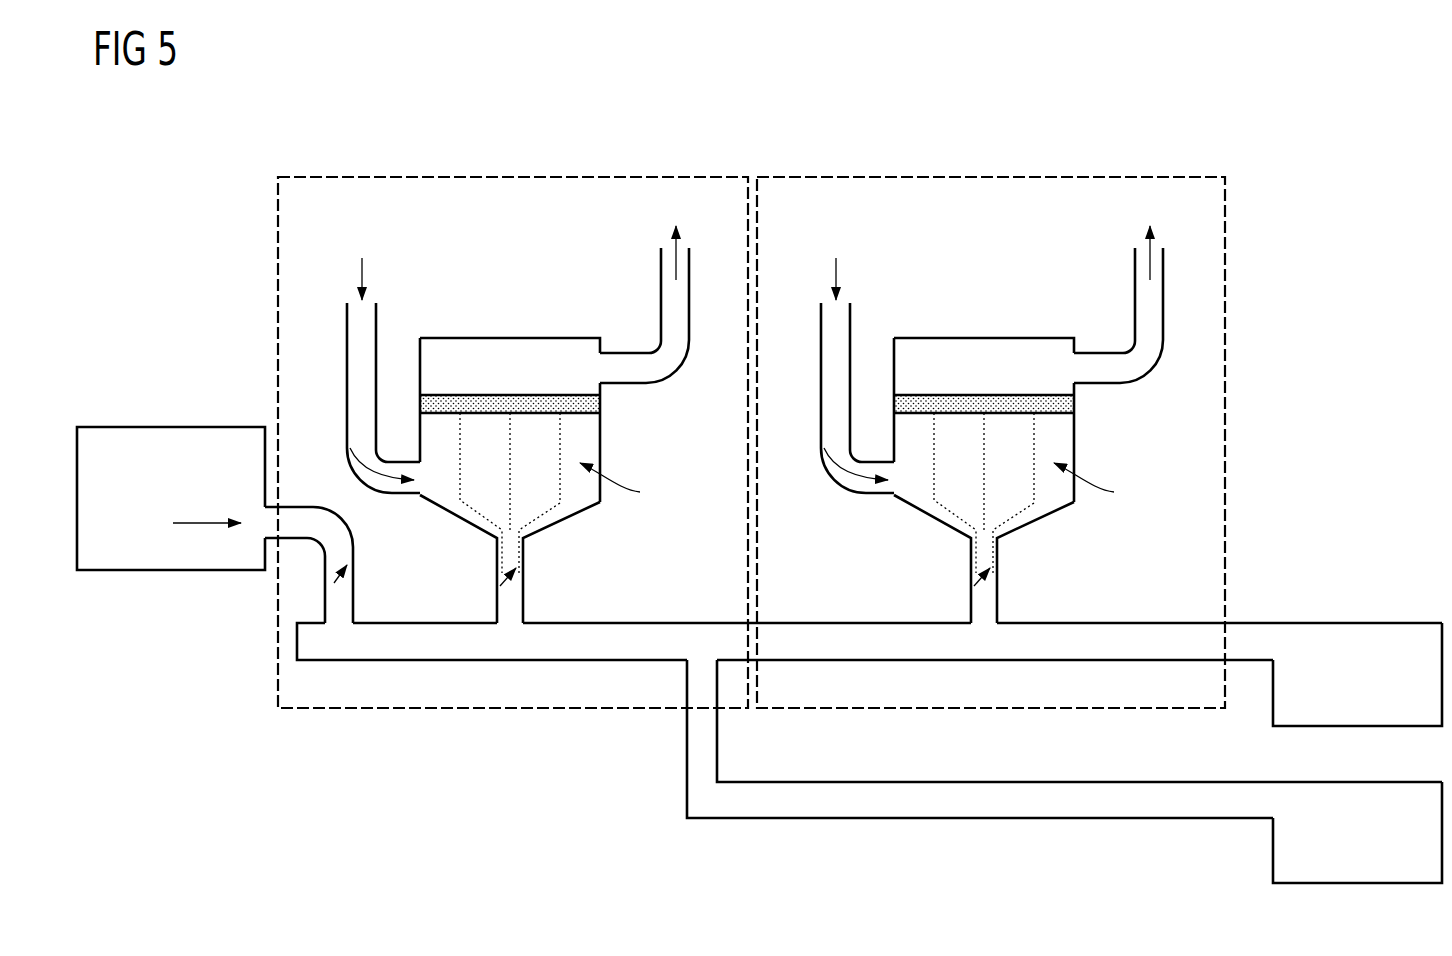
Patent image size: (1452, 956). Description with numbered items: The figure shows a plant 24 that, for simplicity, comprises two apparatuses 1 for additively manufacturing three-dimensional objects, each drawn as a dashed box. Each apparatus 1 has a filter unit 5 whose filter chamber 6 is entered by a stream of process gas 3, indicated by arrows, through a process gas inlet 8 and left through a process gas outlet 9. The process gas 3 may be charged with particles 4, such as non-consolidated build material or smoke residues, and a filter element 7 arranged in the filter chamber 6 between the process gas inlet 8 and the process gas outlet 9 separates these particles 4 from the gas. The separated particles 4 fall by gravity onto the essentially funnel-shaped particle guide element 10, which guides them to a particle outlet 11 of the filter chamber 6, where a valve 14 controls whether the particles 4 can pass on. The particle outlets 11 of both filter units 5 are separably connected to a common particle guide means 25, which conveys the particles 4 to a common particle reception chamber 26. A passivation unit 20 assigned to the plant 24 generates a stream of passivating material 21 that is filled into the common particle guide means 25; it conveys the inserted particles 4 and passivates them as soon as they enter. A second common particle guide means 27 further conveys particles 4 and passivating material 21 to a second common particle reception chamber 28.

The apparatus 1 is at (516, 156).
The process gas 3 is at (360, 272).
The particles 4 is at (457, 498).
The filter unit 5 is at (452, 282).
The filter chamber 6 is at (858, 485).
The filter element 7 is at (600, 405).
The process gas inlet 8 is at (349, 447).
The process gas outlet 9 is at (604, 369).
The particle guide element 10 is at (470, 527).
The particle outlet 11 is at (525, 558).
The valve 14 is at (336, 583).
The passivation unit 20 is at (147, 427).
The passivating material 21 is at (210, 525).
The plant 24 is at (263, 146).
The common particle guide means 25 is at (416, 678).
The common particle reception chamber 26 is at (1271, 700).
The second common particle guide means 27 is at (829, 832).
The second common particle reception chamber 28 is at (1271, 861).